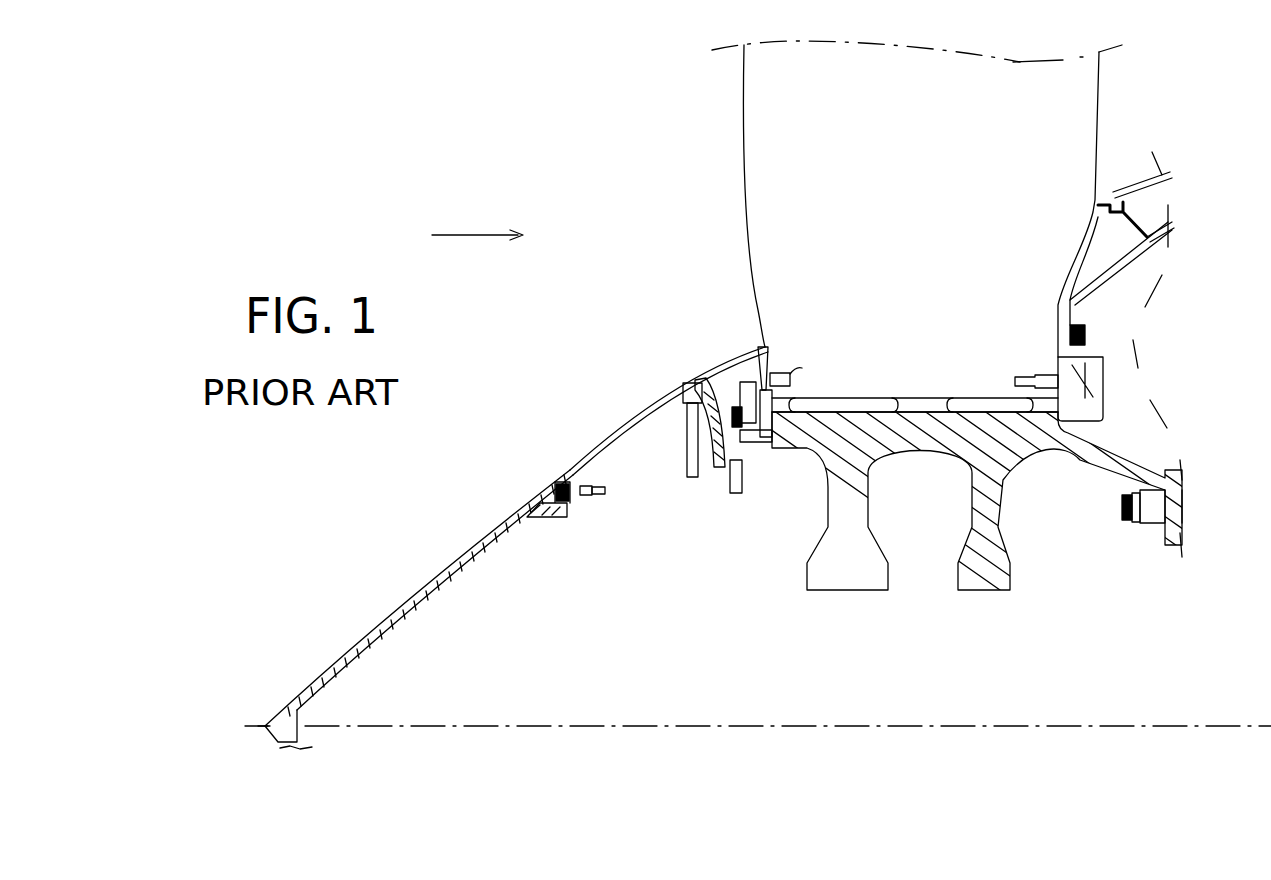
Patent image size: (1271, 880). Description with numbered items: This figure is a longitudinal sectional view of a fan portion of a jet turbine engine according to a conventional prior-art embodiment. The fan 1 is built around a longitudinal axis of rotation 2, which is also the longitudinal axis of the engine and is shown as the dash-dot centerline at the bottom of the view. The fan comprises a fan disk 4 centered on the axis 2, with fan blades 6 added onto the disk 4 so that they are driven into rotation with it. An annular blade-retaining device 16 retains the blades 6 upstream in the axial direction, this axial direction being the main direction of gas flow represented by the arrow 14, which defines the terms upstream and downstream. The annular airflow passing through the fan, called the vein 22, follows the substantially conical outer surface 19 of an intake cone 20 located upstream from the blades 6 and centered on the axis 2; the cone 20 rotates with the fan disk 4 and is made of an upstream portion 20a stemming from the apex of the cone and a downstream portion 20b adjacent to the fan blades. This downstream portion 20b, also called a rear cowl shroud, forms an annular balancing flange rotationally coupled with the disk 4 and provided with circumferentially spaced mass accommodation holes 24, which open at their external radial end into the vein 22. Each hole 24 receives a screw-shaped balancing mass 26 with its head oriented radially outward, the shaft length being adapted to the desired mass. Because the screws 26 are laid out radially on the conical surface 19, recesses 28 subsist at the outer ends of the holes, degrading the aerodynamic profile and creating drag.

The fan 1 is at (620, 155).
The arrow indicating main direction of flow 14 is at (471, 234).
The fan blades 6 is at (1084, 116).
The fan disk 4 is at (1000, 517).
The annular blade-retaining device 16 is at (742, 430).
The screw-shaped balancing mass 26 is at (700, 472).
The mass accommodation holes 24 is at (688, 384).
The recesses 28 is at (698, 377).
The intake cone 20 is at (516, 548).
The upstream portion of the intake cone 20a is at (405, 606).
The downstream portion of the intake cone (rear cowl shroud / balancing flange) 20b is at (623, 422).
The conical outer surface 19 is at (522, 518).
The vein 22 is at (409, 476).
The axis of rotation 2 is at (265, 726).